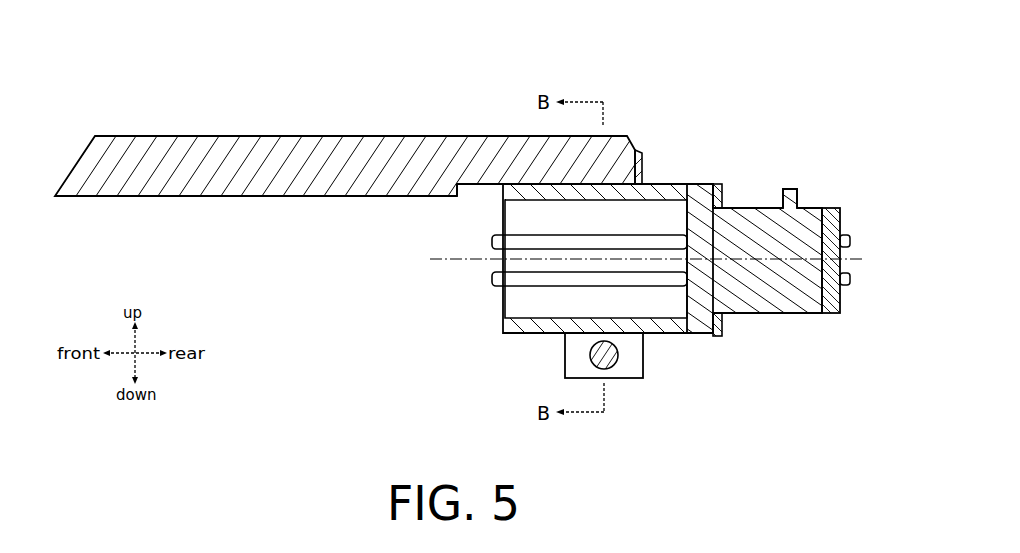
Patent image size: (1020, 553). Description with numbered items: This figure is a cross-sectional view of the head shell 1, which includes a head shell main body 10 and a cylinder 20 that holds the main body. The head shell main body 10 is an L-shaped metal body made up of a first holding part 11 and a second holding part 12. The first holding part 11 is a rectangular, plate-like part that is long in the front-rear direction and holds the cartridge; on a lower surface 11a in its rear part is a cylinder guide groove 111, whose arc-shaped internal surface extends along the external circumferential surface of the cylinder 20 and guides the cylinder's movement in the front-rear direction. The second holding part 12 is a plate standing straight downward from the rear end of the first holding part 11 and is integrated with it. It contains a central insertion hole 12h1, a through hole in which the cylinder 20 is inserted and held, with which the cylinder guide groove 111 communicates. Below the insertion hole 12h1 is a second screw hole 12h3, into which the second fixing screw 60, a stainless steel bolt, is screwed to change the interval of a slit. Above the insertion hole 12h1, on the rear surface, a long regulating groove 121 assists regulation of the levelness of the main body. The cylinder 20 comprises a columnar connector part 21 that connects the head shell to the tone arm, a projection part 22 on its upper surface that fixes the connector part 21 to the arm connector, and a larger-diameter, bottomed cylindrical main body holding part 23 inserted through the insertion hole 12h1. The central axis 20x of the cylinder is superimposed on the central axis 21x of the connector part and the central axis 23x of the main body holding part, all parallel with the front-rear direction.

The head shell 1 is at (150, 76).
The head shell main body 10 is at (175, 203).
The first holding part 11 is at (237, 150).
The lower surface 11a is at (292, 197).
The cylinder guide groove 111 is at (480, 194).
The regulating groove 121 is at (640, 167).
The second holding part 12 is at (633, 345).
The insertion hole 12h1 is at (593, 333).
The second screw hole 12h3 is at (597, 365).
The second fixing screw 60 is at (613, 362).
The cylinder 20 is at (750, 215).
The connector part 21 is at (758, 207).
The projection part 22 is at (790, 189).
The main body holding part 23 is at (703, 239).
The central axis of the cylinder 20x is at (828, 297).
The central axis of the connector part 21x is at (845, 241).
The central axis of the main body holding part 23x is at (862, 265).